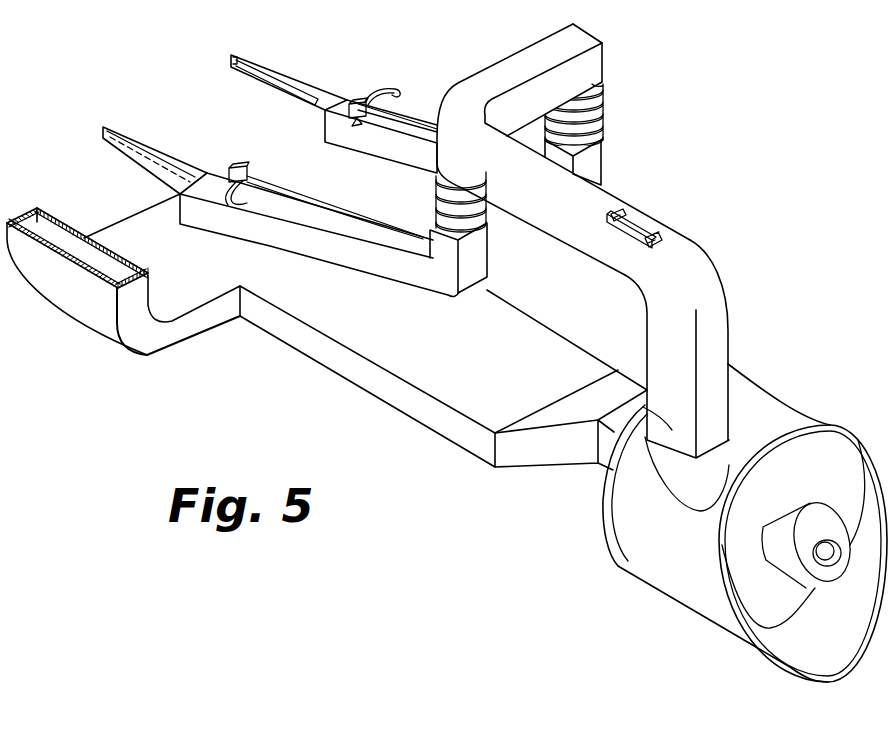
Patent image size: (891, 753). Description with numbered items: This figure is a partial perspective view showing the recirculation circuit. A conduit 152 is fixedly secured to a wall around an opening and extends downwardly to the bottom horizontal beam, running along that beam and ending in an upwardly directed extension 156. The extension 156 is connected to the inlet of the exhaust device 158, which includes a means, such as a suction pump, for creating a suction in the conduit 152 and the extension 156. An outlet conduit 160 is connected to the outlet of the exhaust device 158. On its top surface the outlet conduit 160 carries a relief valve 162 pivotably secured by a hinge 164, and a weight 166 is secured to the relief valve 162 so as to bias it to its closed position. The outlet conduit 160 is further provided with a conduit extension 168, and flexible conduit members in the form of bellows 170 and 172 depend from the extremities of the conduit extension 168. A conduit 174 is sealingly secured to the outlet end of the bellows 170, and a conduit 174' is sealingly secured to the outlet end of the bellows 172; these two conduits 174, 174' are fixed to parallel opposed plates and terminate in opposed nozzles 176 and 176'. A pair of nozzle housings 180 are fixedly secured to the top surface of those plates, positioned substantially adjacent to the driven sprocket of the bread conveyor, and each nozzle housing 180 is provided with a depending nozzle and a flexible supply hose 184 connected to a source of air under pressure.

The conduit 152 is at (140, 303).
The upwardly directed extension 156 is at (542, 338).
The exhaust device 158 is at (796, 410).
The outlet conduit 160 is at (714, 328).
The relief valve 162 is at (641, 228).
The hinge 164 is at (665, 239).
The weight 166 is at (617, 214).
The conduit extension 168 is at (528, 62).
The bellows 170 is at (488, 213).
The bellows 172 is at (604, 115).
The conduit 174 is at (319, 241).
The conduit 174' is at (381, 148).
The nozzle 176 is at (164, 159).
The nozzle 176' is at (257, 82).
The nozzle housing 180 is at (360, 100).
The flexible supply hose 184 is at (390, 88).